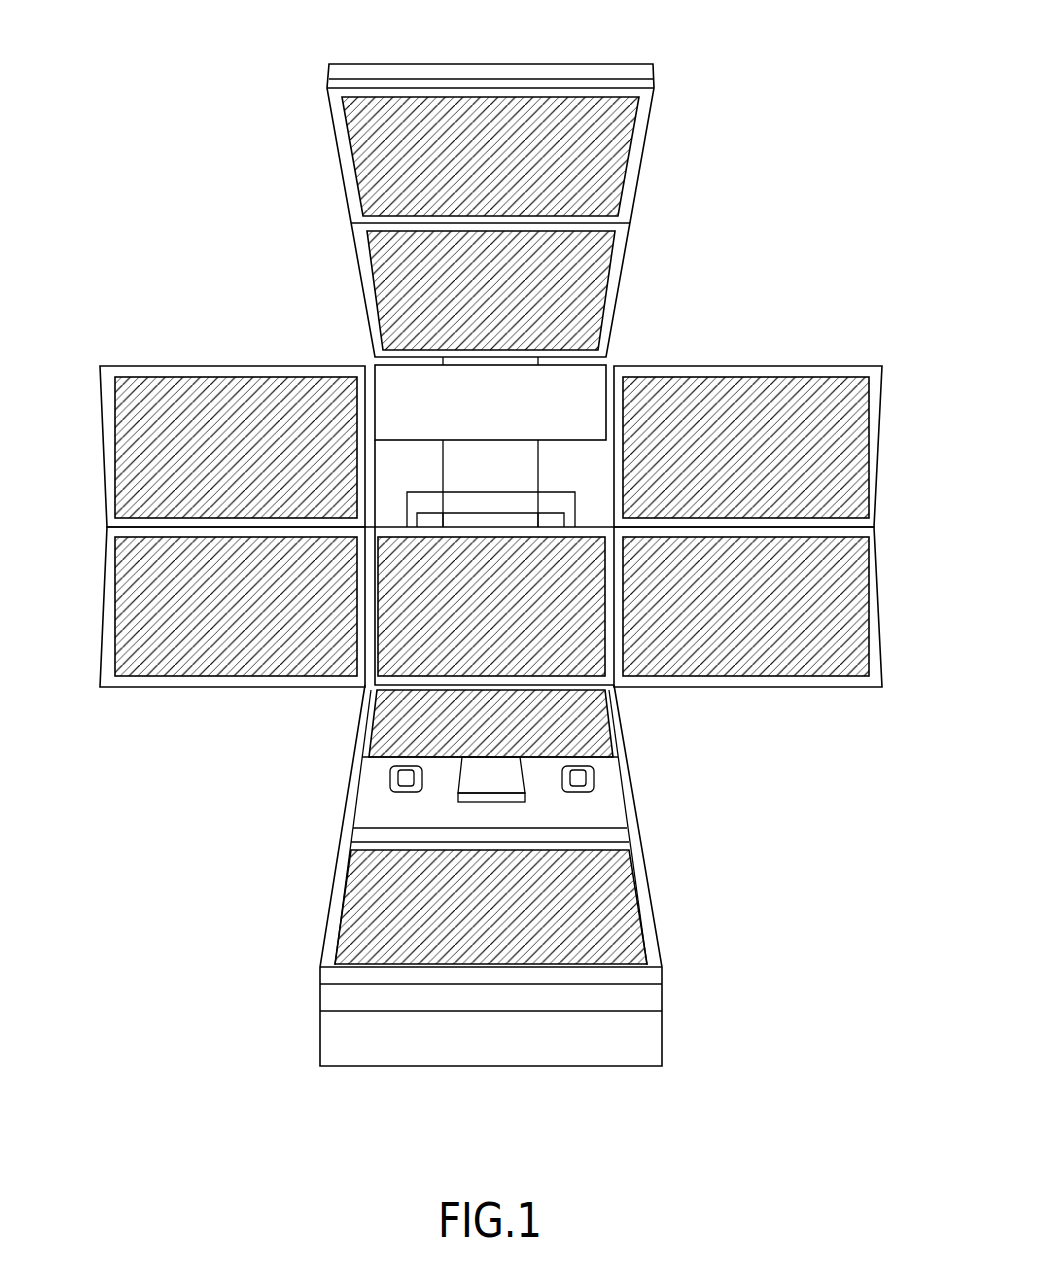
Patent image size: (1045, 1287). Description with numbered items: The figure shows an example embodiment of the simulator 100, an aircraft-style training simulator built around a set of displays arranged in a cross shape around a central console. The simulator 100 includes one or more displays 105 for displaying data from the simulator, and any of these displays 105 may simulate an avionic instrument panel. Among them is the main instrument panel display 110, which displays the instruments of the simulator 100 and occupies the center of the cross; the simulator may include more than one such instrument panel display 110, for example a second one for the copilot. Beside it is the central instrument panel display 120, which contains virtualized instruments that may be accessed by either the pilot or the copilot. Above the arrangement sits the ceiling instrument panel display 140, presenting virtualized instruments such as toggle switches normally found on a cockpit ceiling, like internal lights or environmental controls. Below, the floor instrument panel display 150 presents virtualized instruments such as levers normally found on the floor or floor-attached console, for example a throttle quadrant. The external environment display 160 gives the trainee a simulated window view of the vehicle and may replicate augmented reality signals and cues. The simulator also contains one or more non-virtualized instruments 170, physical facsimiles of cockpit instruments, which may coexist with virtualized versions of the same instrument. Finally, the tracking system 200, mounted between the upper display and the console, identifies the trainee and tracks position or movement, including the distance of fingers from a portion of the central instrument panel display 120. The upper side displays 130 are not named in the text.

The simulator 100 is at (245, 53).
The display 105 is at (843, 602).
The main instrument panel display 110 is at (582, 648).
The central instrument panel display 120 is at (138, 602).
The upper side display panel 130 is at (138, 440).
The ceiling instrument panel display 140 is at (602, 155).
The floor instrument panel display 150 is at (367, 910).
The external environment display 160 is at (393, 733).
The non-virtualized instrument 170 is at (405, 777).
The tracking system 200 is at (420, 392).